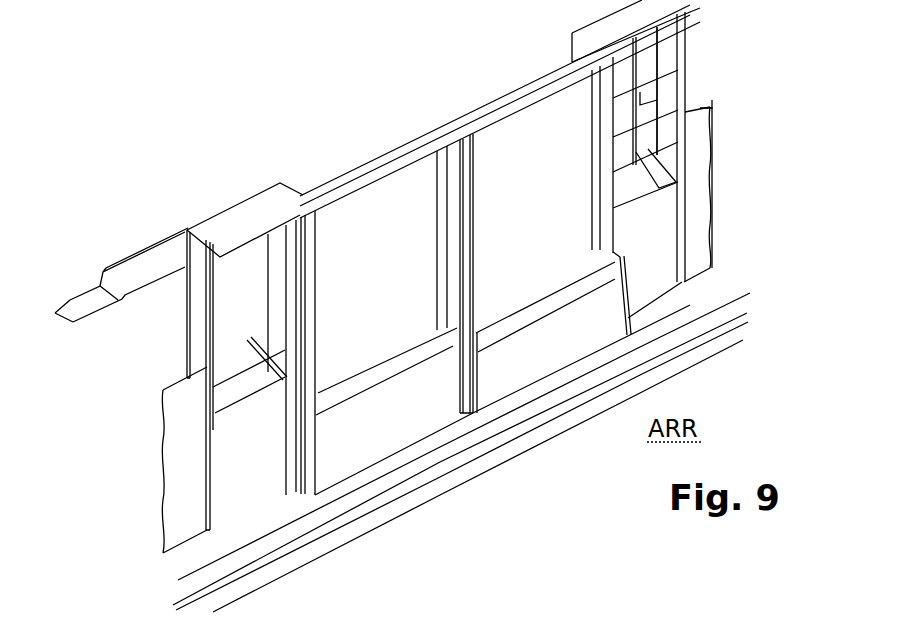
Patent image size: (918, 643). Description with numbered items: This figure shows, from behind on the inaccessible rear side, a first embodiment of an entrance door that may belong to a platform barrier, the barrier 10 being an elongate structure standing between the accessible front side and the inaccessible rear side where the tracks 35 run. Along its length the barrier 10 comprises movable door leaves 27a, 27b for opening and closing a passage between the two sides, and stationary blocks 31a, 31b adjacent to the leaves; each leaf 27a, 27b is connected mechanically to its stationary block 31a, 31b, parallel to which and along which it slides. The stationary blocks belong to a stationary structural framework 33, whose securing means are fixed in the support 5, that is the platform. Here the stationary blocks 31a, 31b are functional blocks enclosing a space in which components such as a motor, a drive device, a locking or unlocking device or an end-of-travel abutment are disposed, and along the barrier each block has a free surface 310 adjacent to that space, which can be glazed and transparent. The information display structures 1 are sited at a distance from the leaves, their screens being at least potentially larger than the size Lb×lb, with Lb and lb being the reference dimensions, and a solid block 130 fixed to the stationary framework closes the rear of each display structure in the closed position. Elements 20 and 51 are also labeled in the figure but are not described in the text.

The information display structure 1 is at (118, 429).
The support 5 is at (423, 128).
The barrier 10 is at (125, 239).
The upper guide rail 20 is at (489, 111).
The movable door leaf 27a is at (494, 101).
The movable door leaf 27b is at (352, 169).
The stationary block 31a is at (584, 49).
The stationary block 31b is at (180, 246).
The structural framework 33 is at (185, 324).
The tracks 35 is at (461, 452).
The vertical frame post 51 is at (216, 325).
The solid block 130 is at (180, 470).
The free surface 310 is at (250, 339).
The free-surface length dimension Lb is at (713, 112).
The free-surface width dimension lb is at (652, 86).